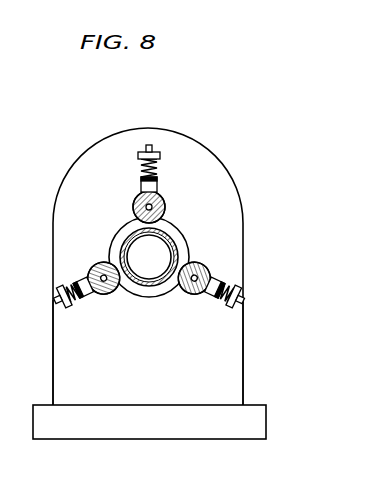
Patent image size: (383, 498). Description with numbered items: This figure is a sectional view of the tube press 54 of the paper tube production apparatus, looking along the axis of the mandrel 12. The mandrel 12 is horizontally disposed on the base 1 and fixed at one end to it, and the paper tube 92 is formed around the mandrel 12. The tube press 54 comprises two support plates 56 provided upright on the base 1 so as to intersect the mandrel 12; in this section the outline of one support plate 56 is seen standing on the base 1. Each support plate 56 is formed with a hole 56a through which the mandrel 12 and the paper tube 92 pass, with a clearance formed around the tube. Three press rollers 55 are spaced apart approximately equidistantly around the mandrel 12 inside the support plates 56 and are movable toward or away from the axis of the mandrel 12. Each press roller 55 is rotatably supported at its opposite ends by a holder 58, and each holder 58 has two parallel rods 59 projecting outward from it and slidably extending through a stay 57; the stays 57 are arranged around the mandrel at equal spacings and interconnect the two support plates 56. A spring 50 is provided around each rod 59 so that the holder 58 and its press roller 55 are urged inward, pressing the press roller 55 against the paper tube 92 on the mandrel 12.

The base 1 is at (235, 428).
The mandrel 12 is at (178, 245).
The spring 50 is at (231, 288).
The tube press 54 is at (226, 164).
The press roller 55 is at (136, 197).
The support plate 56 is at (222, 377).
The hole 56a is at (170, 230).
The stay 57 is at (143, 149).
The holder 58 is at (160, 180).
The rod 59 is at (56, 297).
The paper tube 92 is at (130, 238).